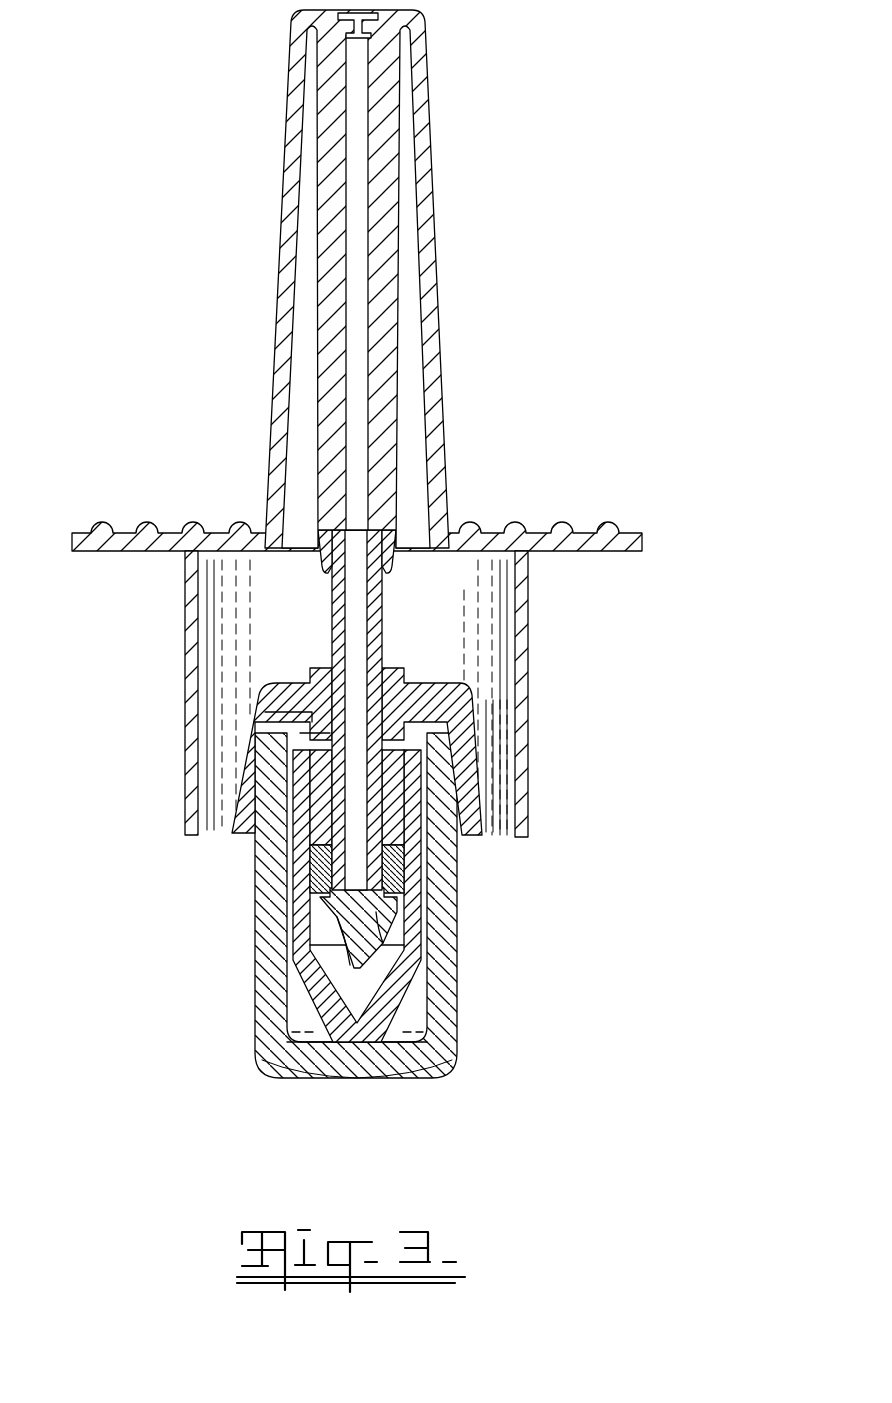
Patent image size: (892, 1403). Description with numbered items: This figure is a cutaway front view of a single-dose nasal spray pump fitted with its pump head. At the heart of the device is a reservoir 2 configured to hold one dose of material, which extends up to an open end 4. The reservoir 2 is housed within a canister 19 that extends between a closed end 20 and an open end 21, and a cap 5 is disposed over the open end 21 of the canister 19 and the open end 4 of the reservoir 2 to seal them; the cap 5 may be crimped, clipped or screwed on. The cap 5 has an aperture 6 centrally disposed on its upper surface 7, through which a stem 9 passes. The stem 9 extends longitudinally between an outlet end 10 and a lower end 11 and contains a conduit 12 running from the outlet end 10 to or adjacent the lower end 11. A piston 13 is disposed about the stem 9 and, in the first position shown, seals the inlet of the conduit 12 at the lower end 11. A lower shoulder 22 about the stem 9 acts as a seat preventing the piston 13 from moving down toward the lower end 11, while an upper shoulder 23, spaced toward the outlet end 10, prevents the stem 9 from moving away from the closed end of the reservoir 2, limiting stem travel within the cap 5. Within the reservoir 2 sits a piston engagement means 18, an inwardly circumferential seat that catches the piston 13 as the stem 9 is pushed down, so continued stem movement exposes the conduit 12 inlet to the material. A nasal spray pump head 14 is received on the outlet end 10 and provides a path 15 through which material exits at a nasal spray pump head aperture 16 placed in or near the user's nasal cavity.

The reservoir 2 is at (388, 930).
The open end 4 is at (357, 1048).
The cap 5 is at (462, 725).
The aperture 6 is at (396, 652).
The upper surface 7 is at (322, 670).
The stem 9 is at (318, 607).
The outlet end 10 is at (352, 533).
The lower end 11 is at (300, 925).
The conduit 12 is at (355, 693).
The piston 13 is at (405, 870).
The nasal spray pump head 14 is at (438, 162).
The path 15 is at (354, 200).
The nasal spray pump head aperture 16 is at (362, 38).
The piston engagement means 18 is at (412, 1000).
The canister 19 is at (257, 1010).
The closed end 20 is at (300, 1076).
The open end 21 is at (455, 797).
The lower shoulder 22 is at (386, 900).
The upper shoulder 23 is at (322, 740).